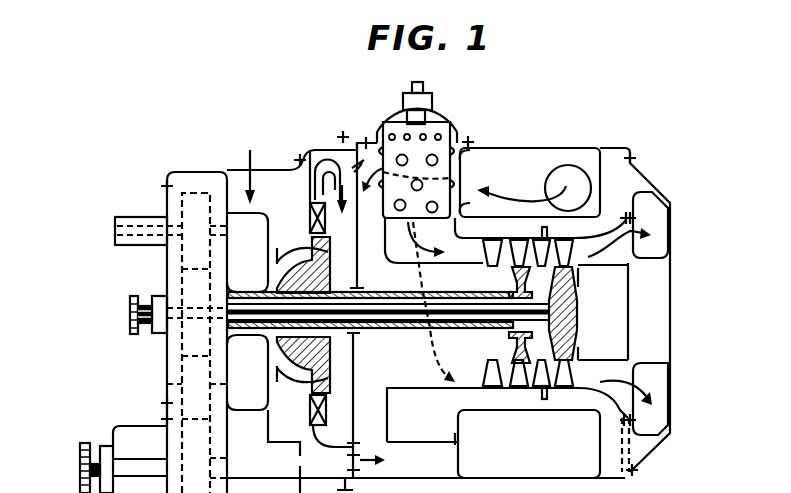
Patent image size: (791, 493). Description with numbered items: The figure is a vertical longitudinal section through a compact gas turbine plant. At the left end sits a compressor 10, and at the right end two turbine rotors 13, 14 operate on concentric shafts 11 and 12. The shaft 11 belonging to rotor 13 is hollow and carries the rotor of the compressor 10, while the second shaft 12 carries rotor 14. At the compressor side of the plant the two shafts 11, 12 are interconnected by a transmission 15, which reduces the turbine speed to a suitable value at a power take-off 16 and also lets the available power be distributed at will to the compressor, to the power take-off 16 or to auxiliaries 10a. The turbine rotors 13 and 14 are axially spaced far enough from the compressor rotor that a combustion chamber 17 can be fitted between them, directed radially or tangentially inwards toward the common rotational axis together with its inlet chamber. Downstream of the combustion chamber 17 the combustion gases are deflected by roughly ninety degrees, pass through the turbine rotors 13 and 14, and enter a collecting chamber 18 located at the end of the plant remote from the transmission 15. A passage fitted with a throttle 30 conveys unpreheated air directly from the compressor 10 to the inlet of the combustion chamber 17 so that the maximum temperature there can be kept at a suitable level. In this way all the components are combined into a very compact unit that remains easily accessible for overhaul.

The compressor 10 is at (308, 250).
The auxiliaries 10a is at (127, 312).
The hollow shaft 11 is at (429, 335).
The shaft 12 is at (384, 328).
The turbine rotor 13 is at (522, 357).
The turbine rotor 14 is at (574, 300).
The transmission 15 is at (163, 353).
The power take-off 16 is at (108, 449).
The combustion chamber 17 is at (441, 134).
The collecting chamber 18 is at (658, 236).
The throttle 30 is at (357, 172).